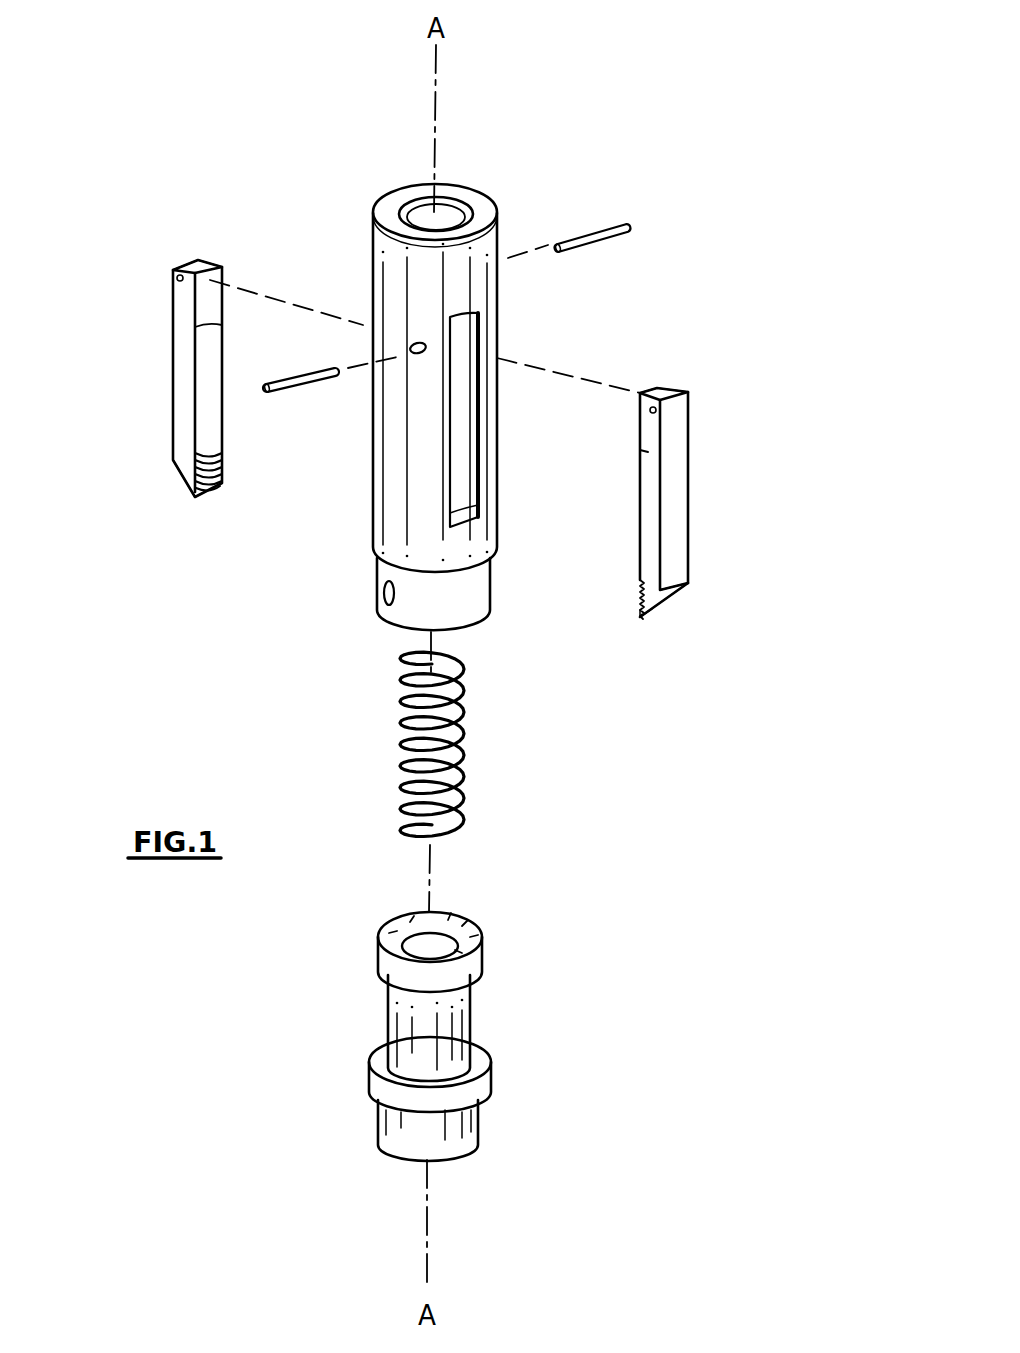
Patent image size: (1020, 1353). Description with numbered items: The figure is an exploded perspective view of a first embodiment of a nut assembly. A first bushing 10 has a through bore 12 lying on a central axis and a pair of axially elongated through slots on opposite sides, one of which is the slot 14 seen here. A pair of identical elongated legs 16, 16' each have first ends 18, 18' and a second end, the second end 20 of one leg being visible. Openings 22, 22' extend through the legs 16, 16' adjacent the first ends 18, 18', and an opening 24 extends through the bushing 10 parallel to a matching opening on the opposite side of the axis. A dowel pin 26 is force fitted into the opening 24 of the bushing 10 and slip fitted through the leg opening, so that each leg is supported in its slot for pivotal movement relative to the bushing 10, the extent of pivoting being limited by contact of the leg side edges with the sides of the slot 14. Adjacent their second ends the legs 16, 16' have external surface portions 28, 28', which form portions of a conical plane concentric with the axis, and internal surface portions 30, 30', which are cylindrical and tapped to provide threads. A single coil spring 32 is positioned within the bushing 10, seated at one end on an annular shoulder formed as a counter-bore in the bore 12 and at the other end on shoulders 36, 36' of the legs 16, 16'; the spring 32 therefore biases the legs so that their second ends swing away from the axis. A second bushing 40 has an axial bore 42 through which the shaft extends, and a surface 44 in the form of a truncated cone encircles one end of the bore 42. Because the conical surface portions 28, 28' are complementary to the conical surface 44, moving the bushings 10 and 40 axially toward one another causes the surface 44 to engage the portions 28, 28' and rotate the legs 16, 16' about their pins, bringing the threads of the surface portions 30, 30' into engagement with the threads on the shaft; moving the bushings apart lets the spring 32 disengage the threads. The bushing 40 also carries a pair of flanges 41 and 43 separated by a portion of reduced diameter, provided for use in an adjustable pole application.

The bushing 10 is at (393, 500).
The through bore 12 is at (447, 213).
The through slot 14 is at (467, 439).
The leg 16 is at (659, 512).
The leg 16' is at (176, 381).
The first end of leg 18 is at (683, 367).
The first end of leg 18' is at (214, 247).
The second end of leg 20 is at (645, 622).
The opening 22 is at (612, 426).
The opening 22' is at (132, 264).
The opening 24 is at (410, 362).
The dowel pin 26 is at (305, 371).
The external surface portion 28 is at (682, 615).
The external surface portion 28' is at (152, 469).
The internal surface portion 30 is at (608, 586).
The internal surface portion 30' is at (233, 495).
The coil spring 32 is at (468, 768).
The shoulder 36 is at (614, 477).
The shoulder 36' is at (172, 327).
The second bushing 40 is at (458, 1023).
The flange 41 is at (385, 970).
The axial bore 42 is at (414, 936).
The flange 43 is at (372, 1093).
The conical surface 44 is at (465, 925).